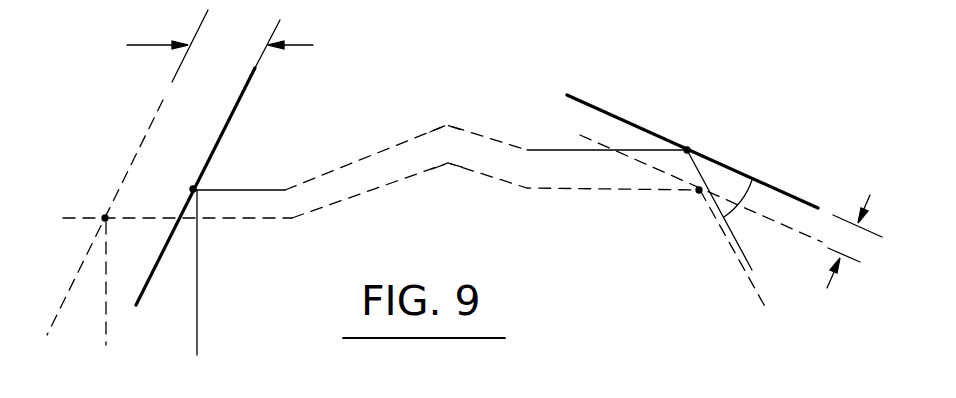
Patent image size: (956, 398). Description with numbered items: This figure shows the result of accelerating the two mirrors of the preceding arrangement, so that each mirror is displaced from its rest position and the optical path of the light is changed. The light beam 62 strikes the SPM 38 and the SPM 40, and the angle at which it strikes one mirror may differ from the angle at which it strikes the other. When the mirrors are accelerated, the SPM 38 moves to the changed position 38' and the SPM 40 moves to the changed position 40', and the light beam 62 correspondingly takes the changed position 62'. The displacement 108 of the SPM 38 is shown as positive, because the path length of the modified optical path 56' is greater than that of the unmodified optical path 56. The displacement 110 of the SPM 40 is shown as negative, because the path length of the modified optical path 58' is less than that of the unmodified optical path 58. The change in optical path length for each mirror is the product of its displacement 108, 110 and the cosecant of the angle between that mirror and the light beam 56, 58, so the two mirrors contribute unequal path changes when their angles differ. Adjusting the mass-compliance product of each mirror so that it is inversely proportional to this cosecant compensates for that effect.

The SPM 38 is at (208, 162).
The SPM in changed position 38' is at (127, 177).
The SPM 40 is at (724, 164).
The SPM in changed position 40' is at (720, 215).
The unmodified optical path 56 is at (360, 228).
The modified optical path 56' is at (381, 215).
The unmodified optical path 58 is at (626, 166).
The modified optical path 58' is at (726, 249).
The light beam 62 is at (421, 100).
The light beam in changed position 62' is at (439, 198).
The displacement 108 is at (220, 46).
The displacement 110 is at (857, 245).